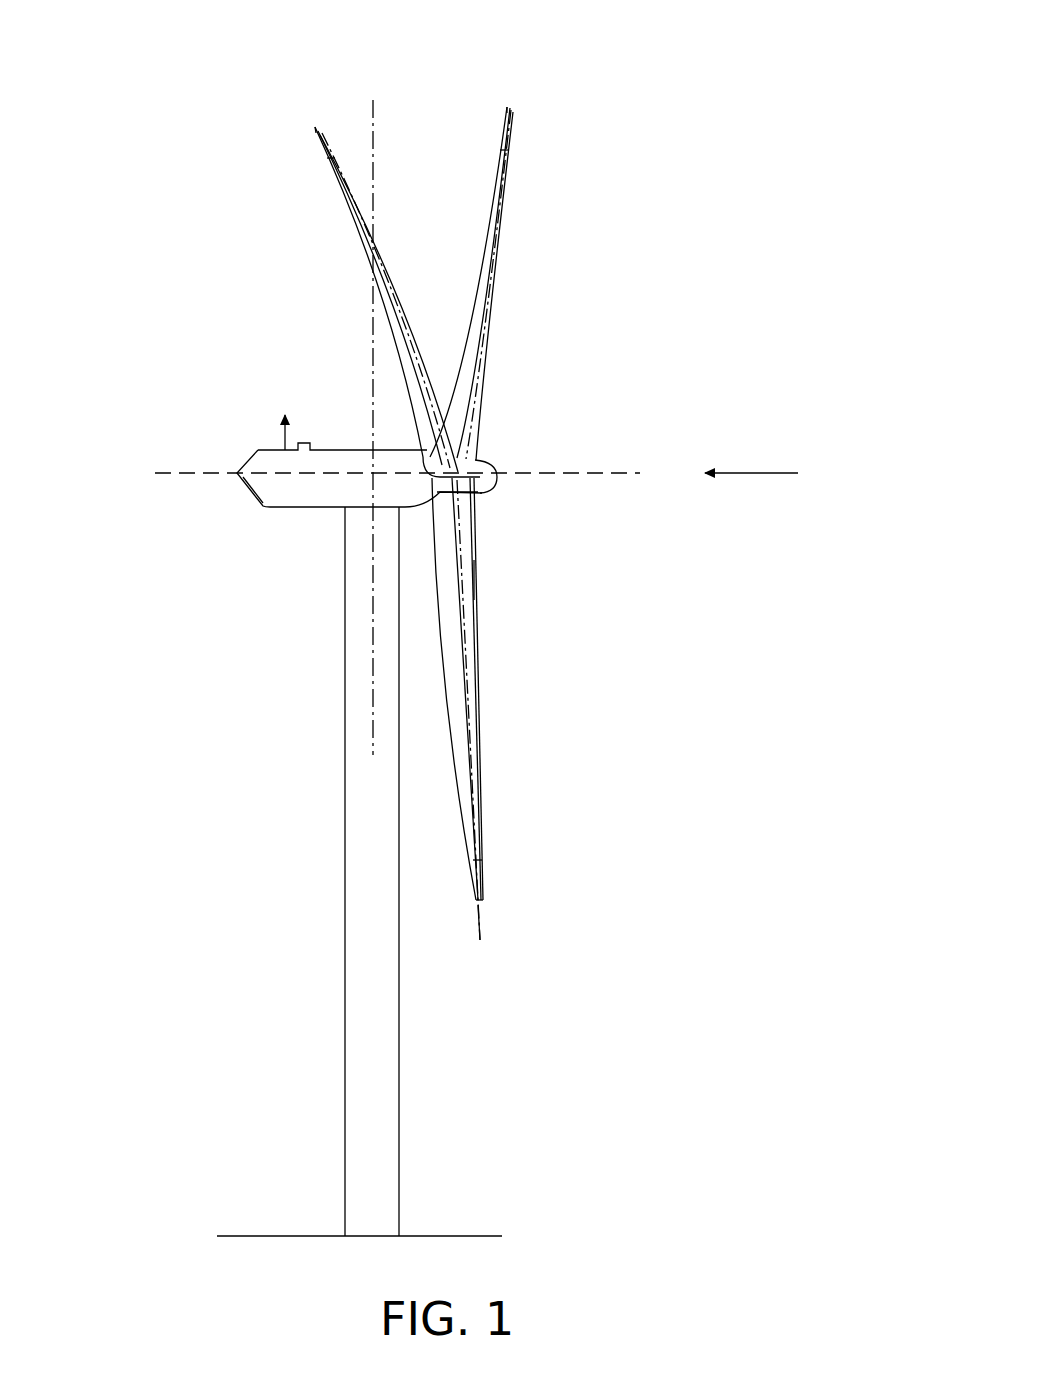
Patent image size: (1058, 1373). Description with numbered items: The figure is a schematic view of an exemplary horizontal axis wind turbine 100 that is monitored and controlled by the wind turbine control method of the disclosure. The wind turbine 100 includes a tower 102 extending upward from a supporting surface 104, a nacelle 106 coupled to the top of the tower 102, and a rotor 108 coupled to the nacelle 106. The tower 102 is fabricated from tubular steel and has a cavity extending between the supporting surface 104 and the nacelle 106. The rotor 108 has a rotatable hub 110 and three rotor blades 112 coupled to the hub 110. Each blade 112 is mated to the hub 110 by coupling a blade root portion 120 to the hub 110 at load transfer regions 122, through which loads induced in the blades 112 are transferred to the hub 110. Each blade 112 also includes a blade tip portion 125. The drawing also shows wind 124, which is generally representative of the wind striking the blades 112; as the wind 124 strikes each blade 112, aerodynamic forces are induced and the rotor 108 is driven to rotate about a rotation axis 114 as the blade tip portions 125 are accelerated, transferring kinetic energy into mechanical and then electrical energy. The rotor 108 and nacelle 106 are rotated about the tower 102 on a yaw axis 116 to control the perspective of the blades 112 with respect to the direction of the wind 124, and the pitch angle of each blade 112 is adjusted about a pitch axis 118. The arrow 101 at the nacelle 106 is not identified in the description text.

The wind turbine 100 is at (272, 62).
The wind sensor 101 is at (260, 422).
The tower 102 is at (345, 1122).
The supporting surface 104 is at (272, 1237).
The nacelle 106 is at (300, 509).
The rotor 108 is at (522, 298).
The rotatable hub 110 is at (498, 462).
The rotor blades 112 is at (368, 262).
The rotation axis 114 is at (613, 473).
The yaw axis 116 is at (375, 102).
The pitch axis 118 is at (315, 128).
The blade root portion 120 is at (478, 588).
The load transfer regions 122 is at (490, 498).
The wind 124 is at (750, 473).
The blade tip portion 125 is at (331, 181).